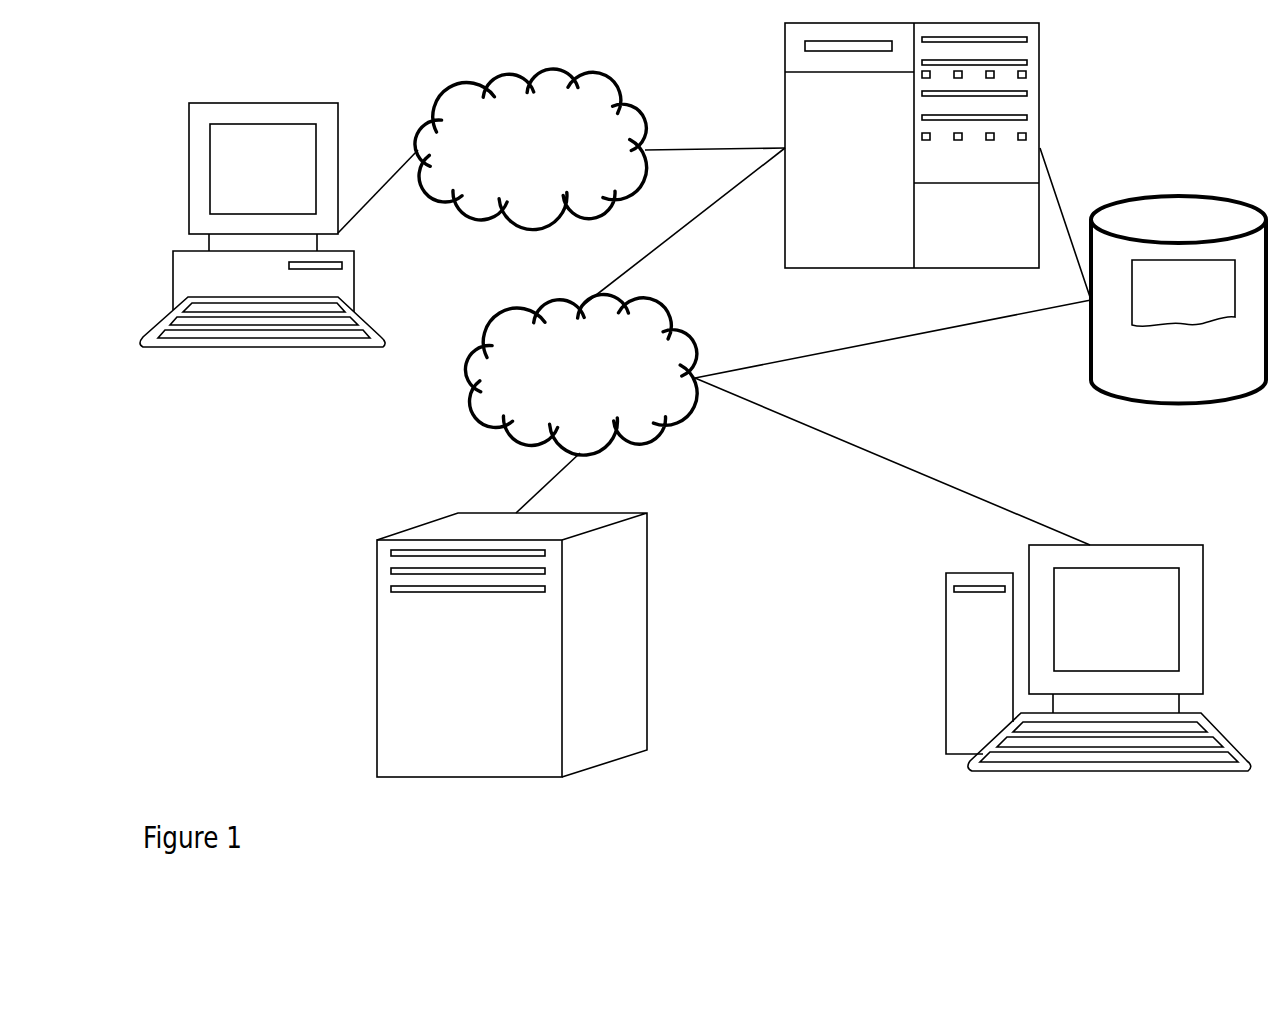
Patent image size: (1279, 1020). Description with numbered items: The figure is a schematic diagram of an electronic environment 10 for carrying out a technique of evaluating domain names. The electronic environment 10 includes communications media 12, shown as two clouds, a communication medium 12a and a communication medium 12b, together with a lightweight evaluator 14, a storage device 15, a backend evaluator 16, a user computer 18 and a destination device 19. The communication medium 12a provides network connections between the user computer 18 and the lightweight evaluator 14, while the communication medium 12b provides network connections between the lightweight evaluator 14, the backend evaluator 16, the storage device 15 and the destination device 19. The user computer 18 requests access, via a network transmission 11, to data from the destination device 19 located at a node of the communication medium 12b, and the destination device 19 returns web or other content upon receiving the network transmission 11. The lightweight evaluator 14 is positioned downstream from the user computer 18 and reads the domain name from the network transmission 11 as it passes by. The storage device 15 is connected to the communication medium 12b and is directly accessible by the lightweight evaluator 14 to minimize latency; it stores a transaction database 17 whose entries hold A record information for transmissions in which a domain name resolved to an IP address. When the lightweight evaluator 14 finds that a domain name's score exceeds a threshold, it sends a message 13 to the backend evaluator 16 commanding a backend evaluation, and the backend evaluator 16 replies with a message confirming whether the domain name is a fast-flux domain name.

The electronic environment 10 is at (288, 594).
The network transmission 11 is at (408, 137).
The communications media 12 is at (488, 219).
The communication medium 12a is at (558, 155).
The communication medium 12b is at (610, 388).
The message 13 is at (743, 196).
The lightweight evaluator 14 is at (840, 237).
The storage device 15 is at (1178, 299).
The backend evaluator 16 is at (441, 728).
The transaction database 17 is at (1177, 300).
The user computer 18 is at (258, 195).
The destination device 19 is at (1104, 645).